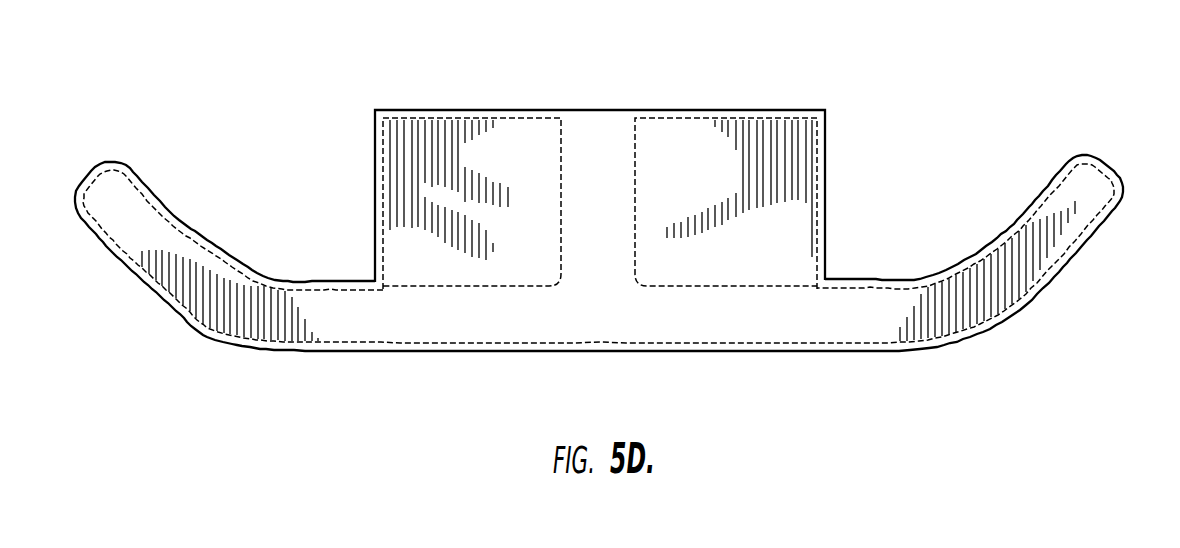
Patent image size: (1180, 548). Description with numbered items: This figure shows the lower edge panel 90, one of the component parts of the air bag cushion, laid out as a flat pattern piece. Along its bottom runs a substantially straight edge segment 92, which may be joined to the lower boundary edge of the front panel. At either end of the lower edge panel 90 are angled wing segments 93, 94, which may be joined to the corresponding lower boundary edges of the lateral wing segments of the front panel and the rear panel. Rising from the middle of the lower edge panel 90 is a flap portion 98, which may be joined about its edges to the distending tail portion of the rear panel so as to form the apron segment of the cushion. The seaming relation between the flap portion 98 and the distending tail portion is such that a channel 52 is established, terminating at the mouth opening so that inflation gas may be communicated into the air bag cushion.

The lower edge panel 90 is at (977, 116).
The substantially straight edge segment 92 is at (335, 374).
The angled wing segment 93 is at (153, 228).
The angled wing segment 94 is at (1098, 180).
The flap portion 98 is at (782, 113).
The channel 52 is at (598, 173).